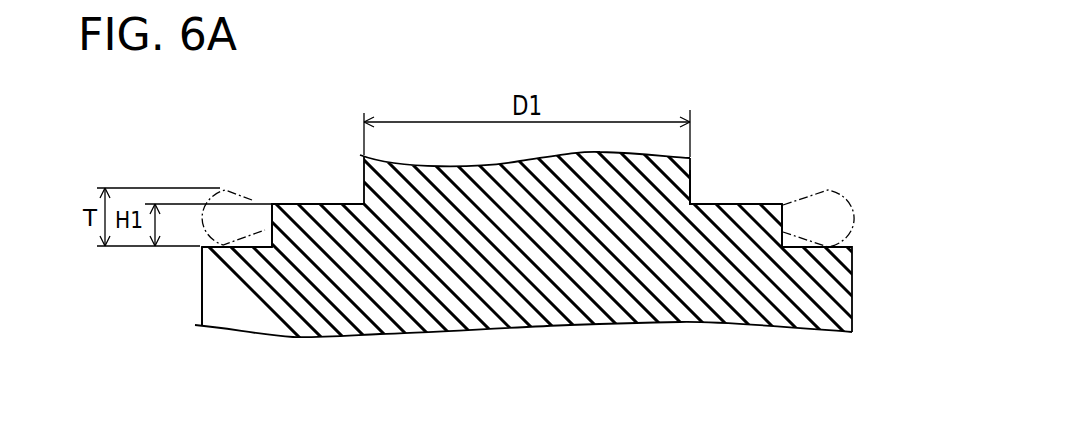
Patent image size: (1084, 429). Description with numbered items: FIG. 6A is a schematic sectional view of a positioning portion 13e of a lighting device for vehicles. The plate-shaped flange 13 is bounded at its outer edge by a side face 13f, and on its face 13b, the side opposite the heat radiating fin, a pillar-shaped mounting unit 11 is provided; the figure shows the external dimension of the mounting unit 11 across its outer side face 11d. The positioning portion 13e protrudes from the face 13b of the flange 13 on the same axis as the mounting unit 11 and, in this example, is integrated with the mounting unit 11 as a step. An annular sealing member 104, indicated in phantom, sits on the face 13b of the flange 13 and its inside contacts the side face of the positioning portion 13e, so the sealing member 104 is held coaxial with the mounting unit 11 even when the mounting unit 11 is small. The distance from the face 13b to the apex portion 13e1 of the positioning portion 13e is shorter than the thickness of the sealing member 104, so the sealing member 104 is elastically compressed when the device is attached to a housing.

The flange 13 is at (217, 292).
The mounting unit 11 is at (674, 172).
The side face of the mounting unit 11d is at (690, 202).
The positioning portion 13e is at (327, 225).
The apex portion of the positioning portion 13e1 is at (288, 203).
The side face of the flange 13f is at (202, 265).
The face of the flange 13b is at (808, 246).
The sealing member 104 is at (845, 192).